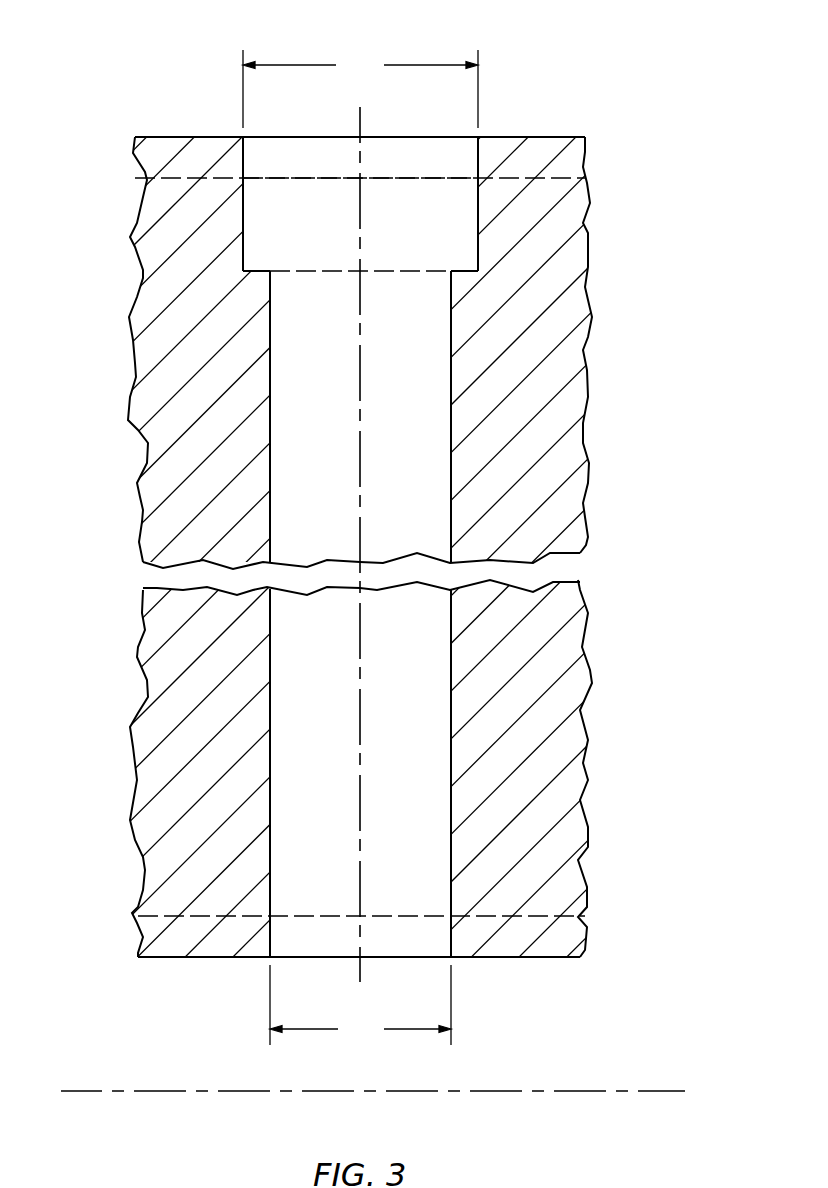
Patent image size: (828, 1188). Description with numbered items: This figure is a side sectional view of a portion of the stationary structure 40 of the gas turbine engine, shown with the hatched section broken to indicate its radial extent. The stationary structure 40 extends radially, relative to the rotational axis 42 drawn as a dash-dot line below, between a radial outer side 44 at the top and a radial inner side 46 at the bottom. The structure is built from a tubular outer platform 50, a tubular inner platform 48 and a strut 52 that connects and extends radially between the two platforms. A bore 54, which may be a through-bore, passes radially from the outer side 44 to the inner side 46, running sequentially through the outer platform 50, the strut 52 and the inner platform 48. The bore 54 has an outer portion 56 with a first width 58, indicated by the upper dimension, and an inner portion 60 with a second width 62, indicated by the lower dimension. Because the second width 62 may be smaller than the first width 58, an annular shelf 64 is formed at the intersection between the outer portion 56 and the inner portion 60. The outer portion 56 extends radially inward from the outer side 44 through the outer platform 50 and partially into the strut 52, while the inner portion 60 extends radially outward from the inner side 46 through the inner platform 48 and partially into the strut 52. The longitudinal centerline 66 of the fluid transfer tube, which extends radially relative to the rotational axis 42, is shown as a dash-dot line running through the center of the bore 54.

The stationary structure 40 is at (414, 500).
The rotational axis 42 is at (83, 1088).
The radial outer side 44 is at (150, 137).
The radial inner side 46 is at (158, 958).
The tubular inner platform 48 is at (590, 934).
The tubular outer platform 50 is at (585, 167).
The strut 52 is at (592, 668).
The bore 54 is at (410, 162).
The outer portion 56 is at (287, 237).
The first width 58 is at (360, 89).
The inner portion 60 is at (324, 386).
The second width 62 is at (360, 1005).
The annular shelf 64 is at (463, 268).
The longitudinal centerline 66 is at (360, 818).